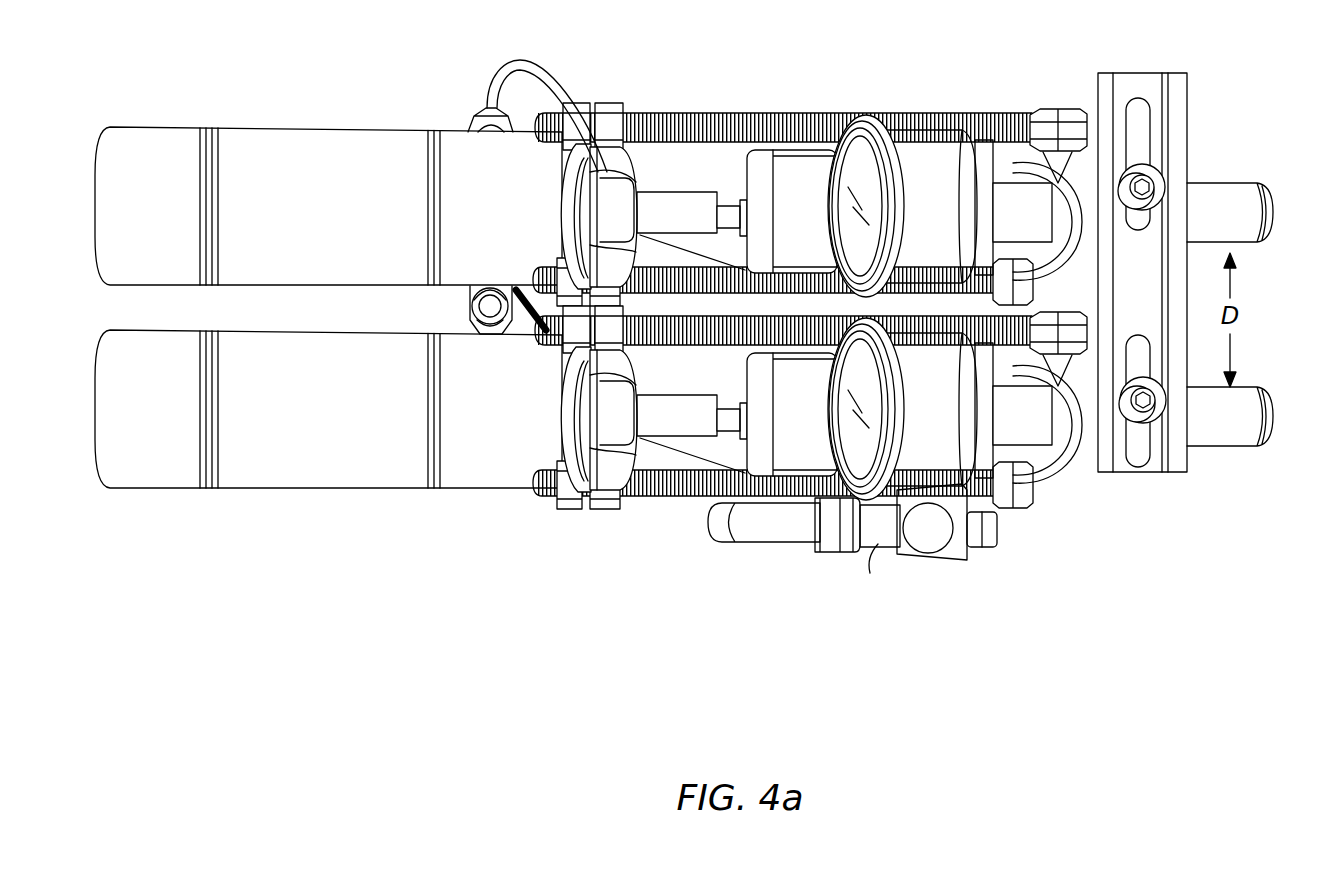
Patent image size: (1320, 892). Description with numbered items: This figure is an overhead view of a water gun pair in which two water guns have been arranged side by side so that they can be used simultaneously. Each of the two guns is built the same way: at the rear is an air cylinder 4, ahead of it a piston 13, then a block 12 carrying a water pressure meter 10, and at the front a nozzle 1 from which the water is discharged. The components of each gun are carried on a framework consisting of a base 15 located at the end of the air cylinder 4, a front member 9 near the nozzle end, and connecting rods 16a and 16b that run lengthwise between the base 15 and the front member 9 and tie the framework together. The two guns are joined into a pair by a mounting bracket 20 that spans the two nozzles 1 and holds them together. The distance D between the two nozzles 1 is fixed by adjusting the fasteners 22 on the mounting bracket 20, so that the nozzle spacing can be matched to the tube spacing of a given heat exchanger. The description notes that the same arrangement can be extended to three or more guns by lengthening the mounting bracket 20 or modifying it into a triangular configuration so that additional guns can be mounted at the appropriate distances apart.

The nozzle 1 is at (1220, 183).
The air cylinder 4 is at (246, 127).
The front member 9 is at (1025, 175).
The water pressure meter 10 is at (910, 307).
The block 12 is at (805, 165).
The piston 13 is at (690, 205).
The base 15 is at (600, 146).
The connecting rod 16a is at (893, 114).
The connecting rod 16b is at (624, 354).
The mounting bracket 20 is at (1187, 100).
The fasteners 22 is at (1136, 175).